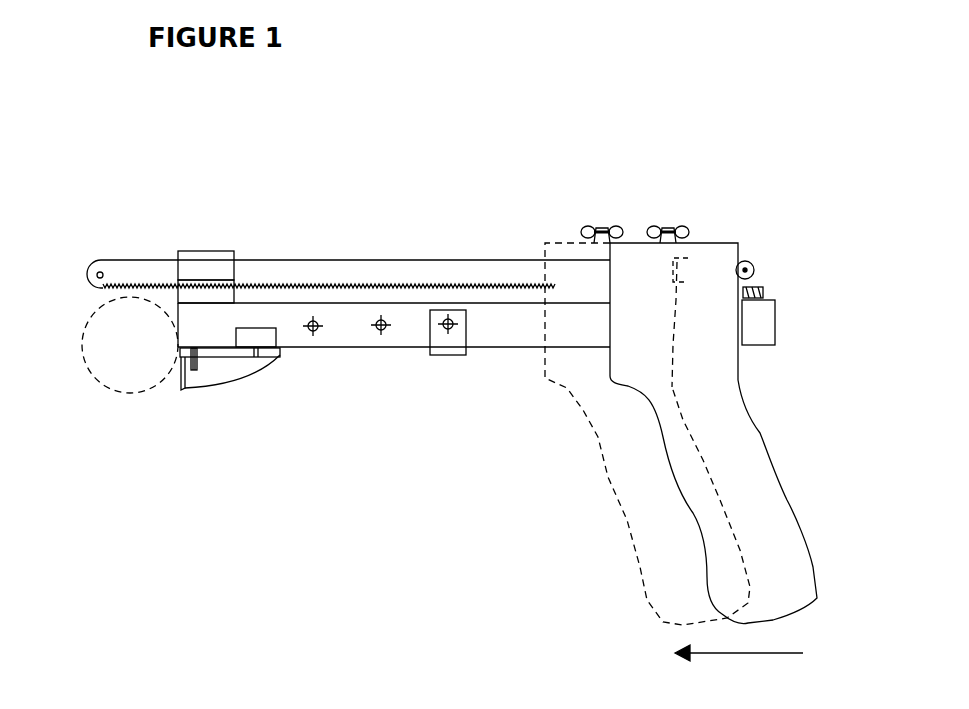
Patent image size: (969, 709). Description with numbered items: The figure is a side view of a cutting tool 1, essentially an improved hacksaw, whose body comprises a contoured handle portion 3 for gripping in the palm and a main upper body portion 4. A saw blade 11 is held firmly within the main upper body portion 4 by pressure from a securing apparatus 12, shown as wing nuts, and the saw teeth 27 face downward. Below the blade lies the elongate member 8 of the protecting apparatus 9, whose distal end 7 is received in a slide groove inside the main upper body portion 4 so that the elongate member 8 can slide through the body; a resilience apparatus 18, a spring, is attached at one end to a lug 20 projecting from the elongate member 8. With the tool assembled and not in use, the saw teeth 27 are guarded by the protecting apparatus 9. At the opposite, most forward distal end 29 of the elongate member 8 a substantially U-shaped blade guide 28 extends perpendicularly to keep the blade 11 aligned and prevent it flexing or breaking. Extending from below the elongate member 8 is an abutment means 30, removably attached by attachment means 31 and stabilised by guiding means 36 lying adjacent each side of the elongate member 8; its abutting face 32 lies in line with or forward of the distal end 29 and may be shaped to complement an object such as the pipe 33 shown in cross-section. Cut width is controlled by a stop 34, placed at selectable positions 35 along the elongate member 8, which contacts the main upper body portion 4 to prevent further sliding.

The tool 1 is at (595, 160).
The handle portion 3 is at (748, 463).
The main upper body portion 4 is at (702, 280).
The distal end 7 is at (775, 318).
The elongate member 8 is at (517, 330).
The protecting apparatus 9 is at (415, 375).
The saw blade 11 is at (402, 269).
The securing apparatus 12 is at (682, 225).
The resilience apparatus 18 is at (752, 288).
The lug 20 is at (763, 285).
The saw teeth 27 is at (103, 288).
The blade guide 28 is at (210, 268).
The distal end 29 is at (178, 338).
The abutment means 30 is at (222, 370).
The attachment means 31 is at (255, 352).
The abutting face 32 is at (178, 376).
The pipe 33 is at (83, 358).
The stop 34 is at (453, 355).
The positions 35 is at (381, 320).
The guiding means 36 is at (275, 332).